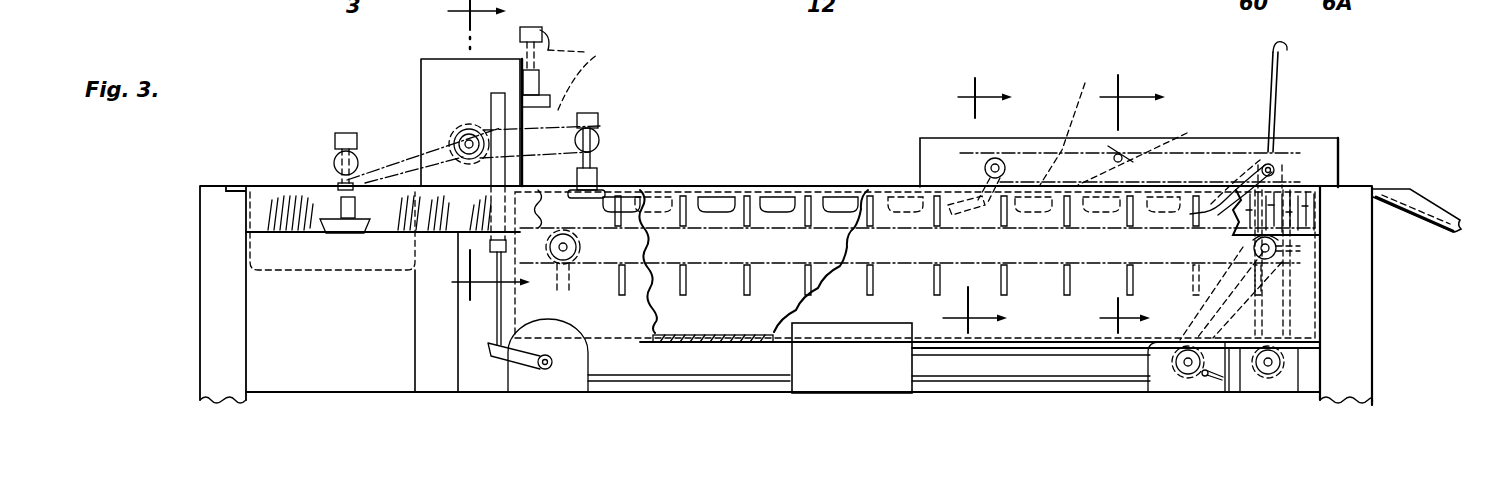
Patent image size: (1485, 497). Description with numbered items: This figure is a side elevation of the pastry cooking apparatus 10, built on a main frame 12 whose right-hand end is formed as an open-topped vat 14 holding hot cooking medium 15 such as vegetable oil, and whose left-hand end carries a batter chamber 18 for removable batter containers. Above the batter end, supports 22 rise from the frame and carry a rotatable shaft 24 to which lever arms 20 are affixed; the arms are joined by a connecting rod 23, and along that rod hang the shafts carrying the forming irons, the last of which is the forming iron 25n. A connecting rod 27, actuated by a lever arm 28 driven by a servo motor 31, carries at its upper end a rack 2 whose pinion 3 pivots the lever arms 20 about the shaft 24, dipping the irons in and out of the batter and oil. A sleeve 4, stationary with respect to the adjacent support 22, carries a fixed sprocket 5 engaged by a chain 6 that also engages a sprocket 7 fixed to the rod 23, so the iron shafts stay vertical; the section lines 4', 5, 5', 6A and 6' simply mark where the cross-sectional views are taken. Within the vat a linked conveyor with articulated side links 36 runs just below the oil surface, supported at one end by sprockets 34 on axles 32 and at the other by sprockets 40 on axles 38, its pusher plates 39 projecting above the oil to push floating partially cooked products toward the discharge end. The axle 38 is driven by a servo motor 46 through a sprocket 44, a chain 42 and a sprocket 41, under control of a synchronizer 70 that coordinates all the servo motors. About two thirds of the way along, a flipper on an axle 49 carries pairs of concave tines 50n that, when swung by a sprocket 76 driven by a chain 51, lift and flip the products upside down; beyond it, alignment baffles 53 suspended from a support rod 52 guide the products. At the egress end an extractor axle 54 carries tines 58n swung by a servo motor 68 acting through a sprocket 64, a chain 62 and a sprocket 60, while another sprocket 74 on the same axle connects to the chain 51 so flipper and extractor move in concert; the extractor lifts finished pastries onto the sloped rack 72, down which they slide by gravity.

The rack 2 is at (484, 95).
The pinion 3 is at (450, 125).
The sleeve 4 is at (487, 24).
The section line 4' is at (497, 281).
The sprocket 5 is at (993, 98).
The section line 5' is at (990, 312).
The chain 6 is at (613, 88).
The section line 6 6A is at (1142, 102).
The section line 6' is at (1139, 318).
The sprocket 7 is at (600, 143).
The apparatus 10 is at (903, 140).
The main frame 12 is at (273, 187).
The vat 14 is at (773, 190).
The cooking medium 15 is at (817, 200).
The batter chamber 18 is at (294, 277).
The lever arms 20 is at (375, 135).
The supports 22 is at (421, 63).
The connecting rod 23 is at (335, 138).
The rotatable shaft 24 is at (470, 146).
The forming iron 25n is at (320, 226).
The connecting rod 27 is at (497, 312).
The lever arm 28 is at (508, 353).
The servo motor 31 is at (590, 350).
The axles 32 is at (566, 250).
The sprockets 34 is at (548, 192).
The articulated side links 36 is at (720, 268).
The axles 38 is at (1288, 258).
The pusher plates 39 is at (747, 190).
The sprockets 40 is at (1293, 283).
The sprocket 41 is at (1323, 214).
The chain 42 is at (1222, 268).
The sprocket 44 is at (1190, 380).
The servo motor 46 is at (1163, 382).
The axle 49 is at (1003, 177).
The tines 50n is at (973, 228).
The chain 51 is at (1074, 118).
The support rod 52 is at (1115, 155).
The alignment baffles 53 is at (1150, 147).
The axle 54 is at (1276, 170).
The tines 58n is at (1277, 88).
The sprocket 60 is at (1300, 165).
The chain 62 is at (1322, 322).
The sprocket 64 is at (1287, 372).
The servo motor 68 is at (1253, 382).
The synchronizer 70 is at (808, 382).
The rack 72 is at (1428, 227).
The sprocket 74 is at (1282, 157).
The sprocket 76 is at (985, 167).